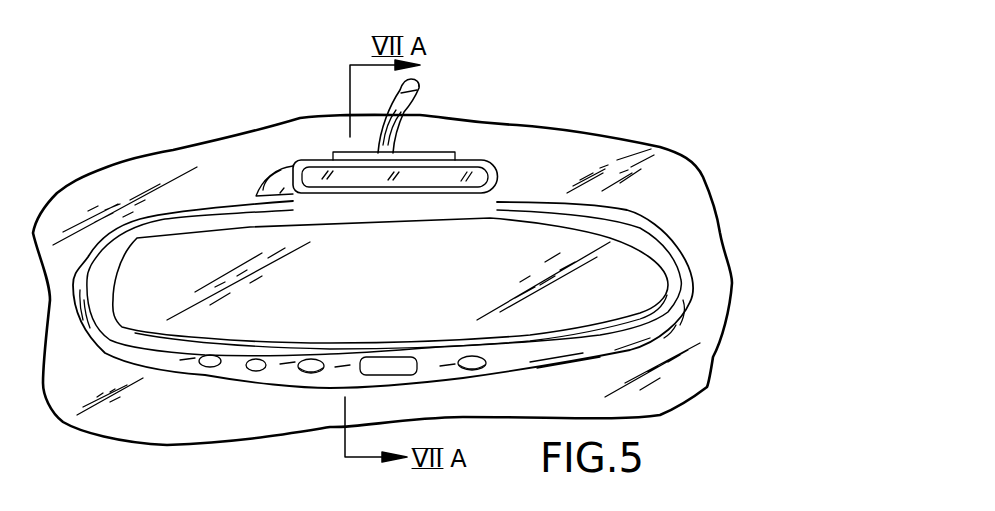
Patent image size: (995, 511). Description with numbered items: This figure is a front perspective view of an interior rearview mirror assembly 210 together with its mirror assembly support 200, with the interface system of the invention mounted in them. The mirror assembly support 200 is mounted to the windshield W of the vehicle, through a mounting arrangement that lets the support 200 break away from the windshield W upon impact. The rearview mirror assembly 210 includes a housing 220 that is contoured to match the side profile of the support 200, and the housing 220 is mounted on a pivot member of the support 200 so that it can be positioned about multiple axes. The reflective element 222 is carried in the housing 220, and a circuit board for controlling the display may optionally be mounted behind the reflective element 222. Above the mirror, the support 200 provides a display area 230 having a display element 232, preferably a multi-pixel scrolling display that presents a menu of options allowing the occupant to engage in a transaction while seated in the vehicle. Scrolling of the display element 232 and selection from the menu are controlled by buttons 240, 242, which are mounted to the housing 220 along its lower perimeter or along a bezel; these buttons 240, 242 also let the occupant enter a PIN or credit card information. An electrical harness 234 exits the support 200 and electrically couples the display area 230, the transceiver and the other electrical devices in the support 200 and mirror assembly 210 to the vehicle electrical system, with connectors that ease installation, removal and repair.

The windshield W is at (607, 145).
The mirror assembly support 200 is at (468, 157).
The interior rearview mirror assembly 210 is at (670, 235).
The housing 220 is at (673, 321).
The reflective element 222 is at (180, 245).
The display area 230 is at (499, 174).
The display element 232 is at (422, 177).
The electrical harness 234 is at (405, 108).
The button 240 is at (209, 367).
The button 242 is at (256, 371).